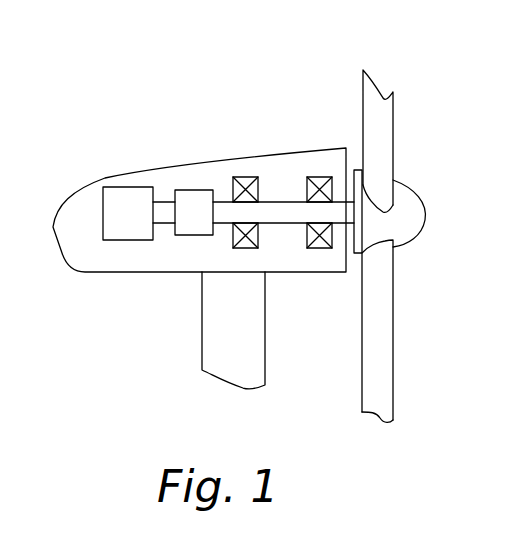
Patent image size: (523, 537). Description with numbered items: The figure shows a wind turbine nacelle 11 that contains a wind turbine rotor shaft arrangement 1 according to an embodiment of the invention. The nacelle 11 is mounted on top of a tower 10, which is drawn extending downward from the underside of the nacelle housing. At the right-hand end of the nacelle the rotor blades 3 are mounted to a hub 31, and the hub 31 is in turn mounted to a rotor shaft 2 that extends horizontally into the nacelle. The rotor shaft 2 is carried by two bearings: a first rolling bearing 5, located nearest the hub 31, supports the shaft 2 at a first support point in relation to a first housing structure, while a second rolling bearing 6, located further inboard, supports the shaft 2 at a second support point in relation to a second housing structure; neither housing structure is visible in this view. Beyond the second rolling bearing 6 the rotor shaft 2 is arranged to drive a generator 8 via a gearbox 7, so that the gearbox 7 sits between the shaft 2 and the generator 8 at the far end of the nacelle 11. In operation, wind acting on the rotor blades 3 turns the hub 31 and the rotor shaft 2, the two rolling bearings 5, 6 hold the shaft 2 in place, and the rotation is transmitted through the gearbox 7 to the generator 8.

The wind turbine rotor shaft arrangement 1 is at (273, 122).
The rotor shaft 2 is at (295, 224).
The rotor blades 3 is at (393, 383).
The first rolling bearing 5 is at (317, 177).
The second rolling bearing 6 is at (245, 177).
The gearbox 7 is at (188, 190).
The generator 8 is at (103, 208).
The tower 10 is at (202, 347).
The wind turbine nacelle 11 is at (63, 258).
The hub 31 is at (425, 233).